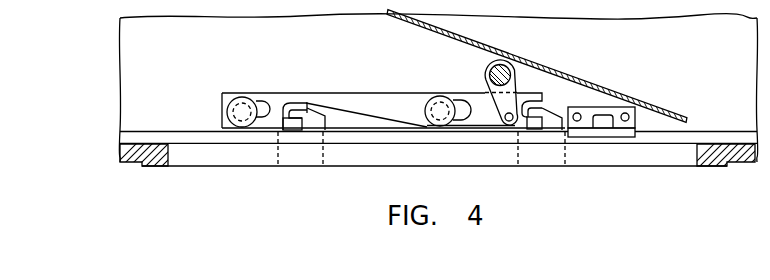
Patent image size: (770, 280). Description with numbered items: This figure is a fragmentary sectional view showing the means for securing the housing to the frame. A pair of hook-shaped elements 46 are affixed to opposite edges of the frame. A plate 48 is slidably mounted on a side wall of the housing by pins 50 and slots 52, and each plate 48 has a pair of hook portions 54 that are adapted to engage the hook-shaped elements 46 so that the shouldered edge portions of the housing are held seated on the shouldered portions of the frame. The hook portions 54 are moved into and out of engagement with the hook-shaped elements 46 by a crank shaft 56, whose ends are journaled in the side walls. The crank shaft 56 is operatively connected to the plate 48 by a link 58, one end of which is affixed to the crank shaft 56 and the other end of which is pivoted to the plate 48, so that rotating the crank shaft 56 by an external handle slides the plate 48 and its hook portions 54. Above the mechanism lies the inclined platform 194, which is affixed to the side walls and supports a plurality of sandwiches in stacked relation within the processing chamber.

The hook-shaped elements 46 is at (305, 103).
The plates 48 is at (380, 98).
The pins 50 is at (228, 108).
The slots 52 is at (264, 100).
The hook portions 54 is at (286, 130).
The crank shaft 56 is at (500, 64).
The link 58 is at (516, 80).
The platform 194 is at (445, 36).